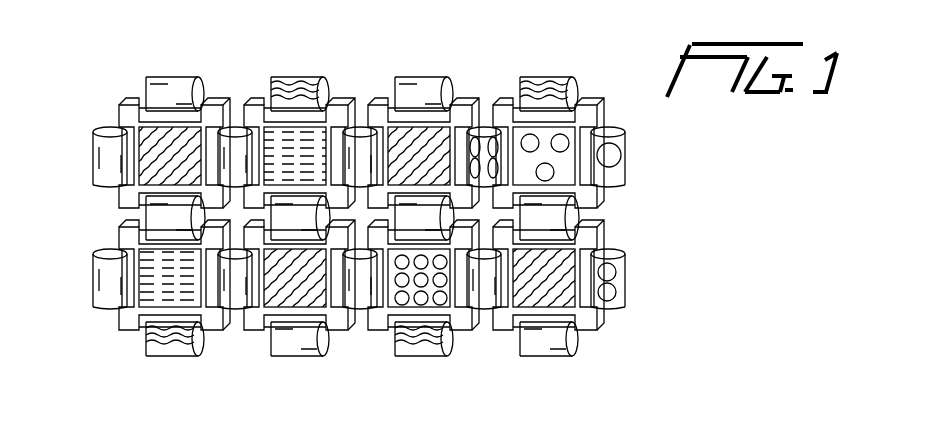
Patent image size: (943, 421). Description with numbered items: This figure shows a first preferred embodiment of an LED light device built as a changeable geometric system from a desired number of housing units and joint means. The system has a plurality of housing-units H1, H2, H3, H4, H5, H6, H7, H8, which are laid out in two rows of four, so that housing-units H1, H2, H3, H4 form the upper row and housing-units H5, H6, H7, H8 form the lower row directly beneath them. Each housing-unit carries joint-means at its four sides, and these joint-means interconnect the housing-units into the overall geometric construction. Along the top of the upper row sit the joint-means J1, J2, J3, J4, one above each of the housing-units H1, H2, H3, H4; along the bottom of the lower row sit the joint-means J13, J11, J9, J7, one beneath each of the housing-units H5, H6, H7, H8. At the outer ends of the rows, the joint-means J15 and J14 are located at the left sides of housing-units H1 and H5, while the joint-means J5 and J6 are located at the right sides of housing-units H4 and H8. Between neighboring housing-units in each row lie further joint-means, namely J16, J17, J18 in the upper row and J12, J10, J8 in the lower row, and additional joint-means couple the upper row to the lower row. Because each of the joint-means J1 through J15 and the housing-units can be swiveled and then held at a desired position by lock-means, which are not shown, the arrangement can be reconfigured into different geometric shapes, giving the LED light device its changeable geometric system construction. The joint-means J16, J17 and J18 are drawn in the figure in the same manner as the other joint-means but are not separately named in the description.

The housing-unit H1 is at (125, 103).
The housing-unit H2 is at (252, 103).
The housing-unit H3 is at (380, 103).
The housing-unit H4 is at (507, 103).
The housing-unit H5 is at (130, 332).
The housing-unit H6 is at (253, 333).
The housing-unit H7 is at (380, 333).
The housing-unit H8 is at (505, 333).
The joint-means J1 is at (164, 82).
The joint-means J2 is at (296, 82).
The joint-means J3 is at (420, 90).
The joint-means J4 is at (558, 82).
The joint-means J5 is at (625, 153).
The joint-means J6 is at (625, 280).
The joint-means J7 is at (543, 350).
The joint-means J8 is at (488, 308).
The joint-means J9 is at (435, 350).
The joint-means J10 is at (366, 308).
The joint-means J11 is at (300, 345).
The joint-means J12 is at (243, 310).
The joint-means J13 is at (158, 348).
The joint-means J14 is at (98, 266).
The joint-means J15 is at (100, 148).
The joint module J16 is at (228, 128).
The joint module J17 is at (357, 128).
The joint module J18 is at (486, 128).